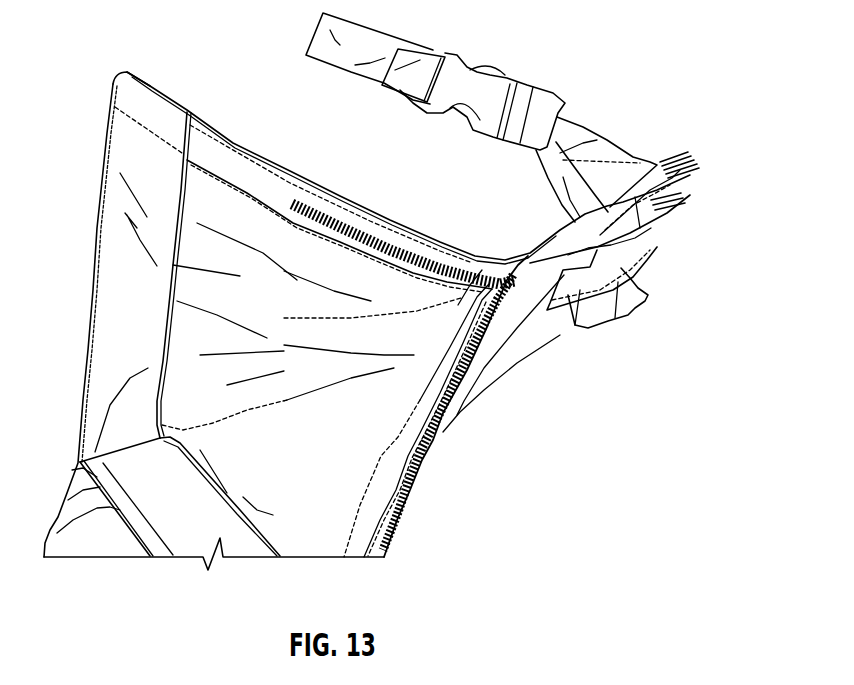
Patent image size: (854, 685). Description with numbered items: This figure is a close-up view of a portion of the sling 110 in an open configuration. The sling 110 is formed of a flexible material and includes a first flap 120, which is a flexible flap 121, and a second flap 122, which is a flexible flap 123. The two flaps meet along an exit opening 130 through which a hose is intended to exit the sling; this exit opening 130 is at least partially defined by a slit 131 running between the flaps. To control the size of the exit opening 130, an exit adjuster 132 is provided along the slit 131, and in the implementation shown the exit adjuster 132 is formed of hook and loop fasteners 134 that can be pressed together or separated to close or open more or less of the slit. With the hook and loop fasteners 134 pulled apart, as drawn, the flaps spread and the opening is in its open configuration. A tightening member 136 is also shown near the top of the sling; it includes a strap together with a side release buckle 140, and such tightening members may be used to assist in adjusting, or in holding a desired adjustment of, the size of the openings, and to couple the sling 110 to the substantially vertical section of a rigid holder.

The sling 110 is at (494, 358).
The first flap 120 is at (341, 508).
The flexible flap 121 is at (301, 516).
The second flap 122 is at (203, 207).
The flexible flap 123 is at (190, 368).
The exit opening 130 is at (483, 258).
The slit 131 is at (337, 200).
The exit adjuster 132 is at (307, 203).
The hook and loop fasteners 134 is at (365, 230).
The tightening member 136 is at (605, 150).
The side release buckle 140 is at (497, 92).